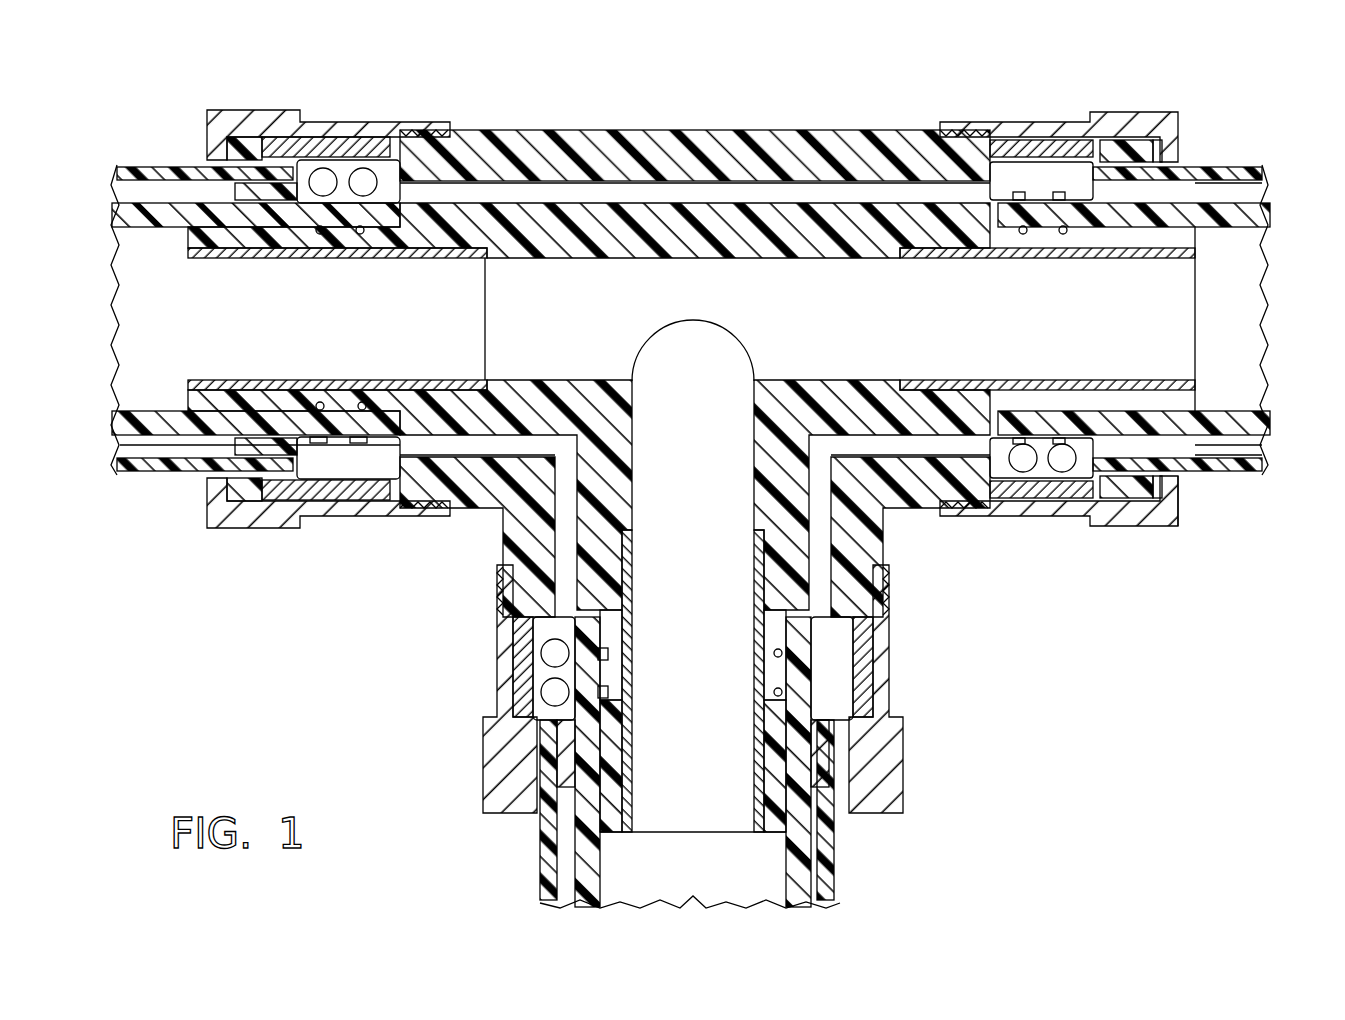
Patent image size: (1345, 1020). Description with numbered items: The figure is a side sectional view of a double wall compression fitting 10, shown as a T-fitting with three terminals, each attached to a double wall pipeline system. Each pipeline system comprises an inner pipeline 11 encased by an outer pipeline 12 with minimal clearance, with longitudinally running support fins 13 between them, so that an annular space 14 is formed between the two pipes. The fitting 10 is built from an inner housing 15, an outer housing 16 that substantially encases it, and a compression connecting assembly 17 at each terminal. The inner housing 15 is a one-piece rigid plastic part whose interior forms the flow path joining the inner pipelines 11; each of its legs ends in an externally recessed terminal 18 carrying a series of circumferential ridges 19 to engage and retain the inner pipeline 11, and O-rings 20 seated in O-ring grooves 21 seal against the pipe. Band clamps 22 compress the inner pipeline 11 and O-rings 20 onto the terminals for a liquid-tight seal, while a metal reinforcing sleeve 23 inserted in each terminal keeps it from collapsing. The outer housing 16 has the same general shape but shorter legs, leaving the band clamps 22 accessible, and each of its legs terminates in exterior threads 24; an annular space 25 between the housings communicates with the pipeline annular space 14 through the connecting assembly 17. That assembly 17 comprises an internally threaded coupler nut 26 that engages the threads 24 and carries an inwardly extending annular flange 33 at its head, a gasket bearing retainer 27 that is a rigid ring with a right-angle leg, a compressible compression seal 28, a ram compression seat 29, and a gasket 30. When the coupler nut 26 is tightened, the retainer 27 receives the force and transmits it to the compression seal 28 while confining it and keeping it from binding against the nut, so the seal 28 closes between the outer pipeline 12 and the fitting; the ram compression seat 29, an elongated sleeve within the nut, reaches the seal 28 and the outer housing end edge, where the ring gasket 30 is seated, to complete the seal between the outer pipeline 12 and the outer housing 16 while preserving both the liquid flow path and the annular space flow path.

The double wall compression fitting 10 is at (717, 429).
The inner pipeline 11 is at (140, 324).
The outer pipeline 12 is at (1225, 470).
The support fins 13 is at (1197, 501).
The annular space 14 is at (1265, 440).
The inner housing 15 is at (588, 395).
The outer housing 16 is at (585, 150).
The compression connecting assembly 17 is at (1093, 293).
The externally recessed terminal 18 is at (1090, 390).
The ridges 19 is at (1138, 390).
The O-rings 20 is at (970, 385).
The O-ring grooves 21 is at (1030, 410).
The band clamps 22 is at (1028, 460).
The metal reinforcing sleeve 23 is at (945, 258).
The exterior threads 24 is at (968, 140).
The annular space 25 is at (725, 190).
The coupler nut 26 is at (1122, 120).
The gasket bearing retainer 27 is at (1180, 122).
The compression seal 28 is at (1133, 150).
The ram compression seat 29 is at (1063, 145).
The gasket 30 is at (1025, 145).
The annular flange 33 is at (1185, 150).